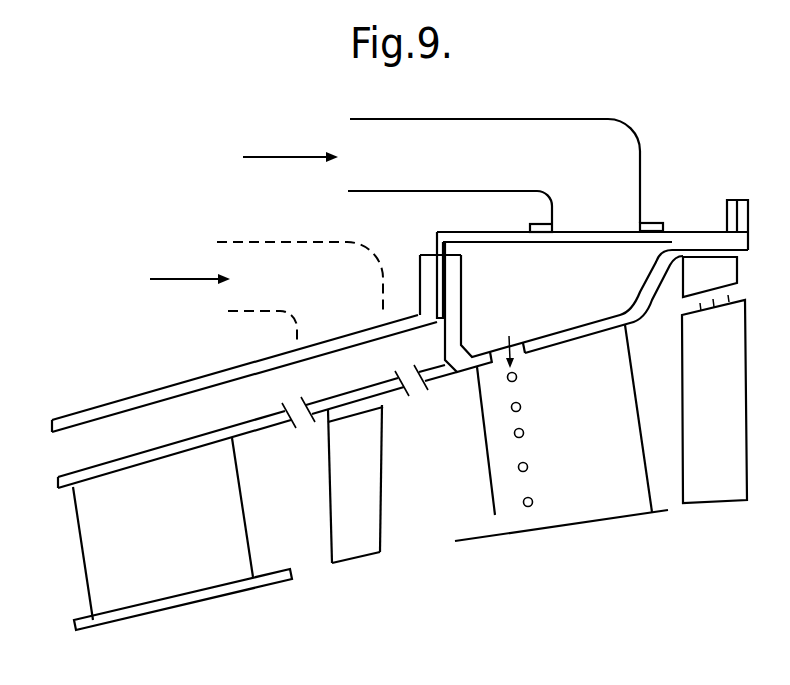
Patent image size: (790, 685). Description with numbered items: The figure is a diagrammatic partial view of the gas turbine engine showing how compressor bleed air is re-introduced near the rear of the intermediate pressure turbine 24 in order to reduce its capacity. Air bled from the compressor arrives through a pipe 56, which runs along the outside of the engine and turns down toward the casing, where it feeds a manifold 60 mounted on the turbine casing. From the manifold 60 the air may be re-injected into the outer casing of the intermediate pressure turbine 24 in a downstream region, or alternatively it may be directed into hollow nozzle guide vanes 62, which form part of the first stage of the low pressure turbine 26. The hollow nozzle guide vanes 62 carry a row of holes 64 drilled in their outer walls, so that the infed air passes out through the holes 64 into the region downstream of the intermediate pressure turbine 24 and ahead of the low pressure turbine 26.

The pipe 56 is at (538, 126).
The manifold 60 is at (648, 248).
The hollow nozzle guide vanes 62 is at (575, 504).
The holes 64 is at (511, 476).
The low pressure turbine 26 is at (719, 514).
The intermediate pressure turbine 24 is at (346, 580).